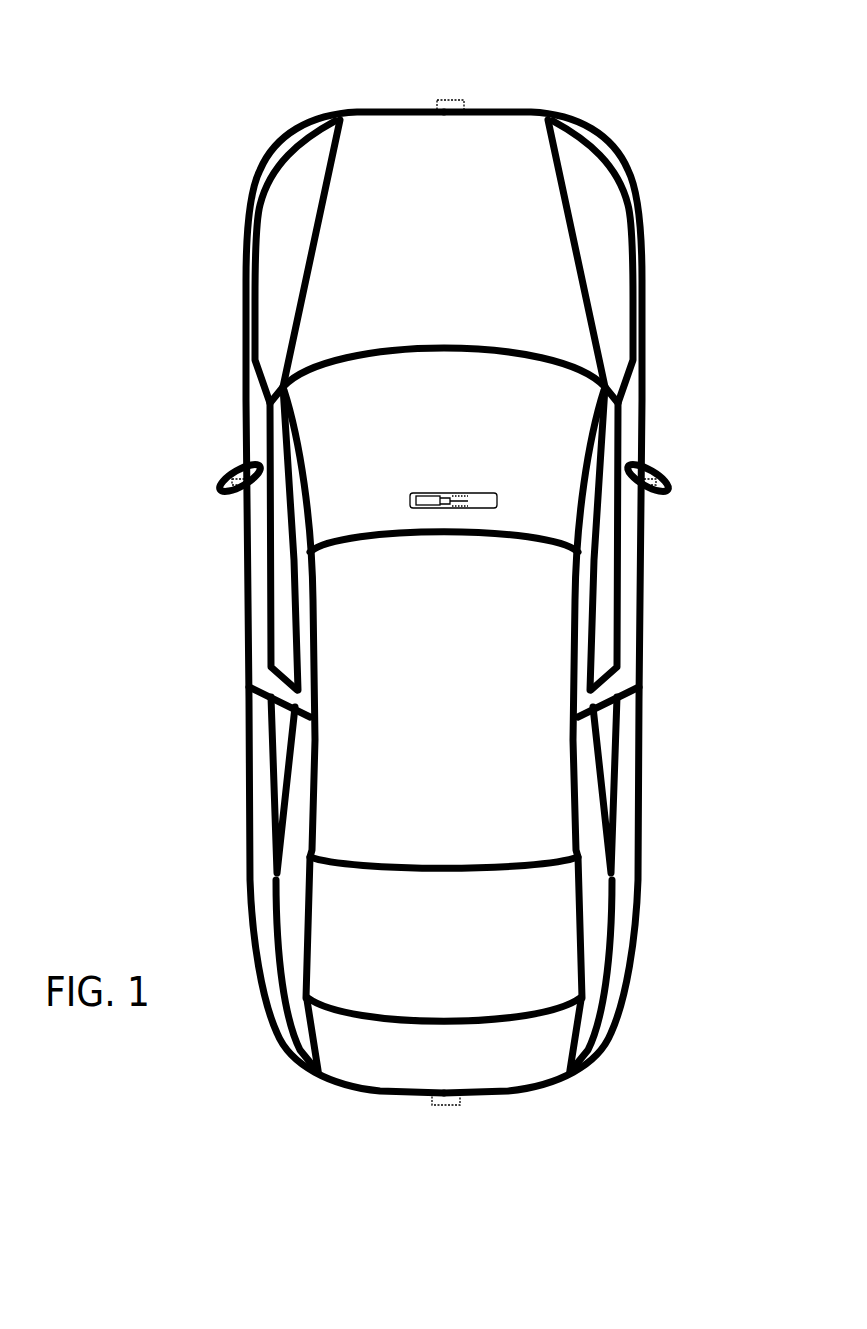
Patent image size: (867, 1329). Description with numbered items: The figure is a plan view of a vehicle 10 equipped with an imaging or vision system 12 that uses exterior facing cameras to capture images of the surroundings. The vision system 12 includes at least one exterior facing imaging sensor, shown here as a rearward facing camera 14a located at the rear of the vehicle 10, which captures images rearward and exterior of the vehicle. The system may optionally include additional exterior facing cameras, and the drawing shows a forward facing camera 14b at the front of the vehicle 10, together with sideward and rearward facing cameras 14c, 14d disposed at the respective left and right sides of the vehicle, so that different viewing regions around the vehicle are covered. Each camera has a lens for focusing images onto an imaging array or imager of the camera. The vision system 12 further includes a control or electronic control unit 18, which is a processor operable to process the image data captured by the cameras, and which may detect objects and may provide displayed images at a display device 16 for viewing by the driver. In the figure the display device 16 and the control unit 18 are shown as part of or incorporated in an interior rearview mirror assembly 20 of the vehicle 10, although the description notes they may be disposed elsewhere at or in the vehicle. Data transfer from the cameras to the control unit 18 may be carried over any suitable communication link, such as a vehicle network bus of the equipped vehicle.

The vehicle 10 is at (190, 199).
The vision system 12 is at (388, 1129).
The rearward facing camera 14a is at (452, 1104).
The forward facing camera 14b is at (463, 96).
The sideward/rearward facing camera 14c is at (232, 473).
The sideward/rearward facing camera 14d is at (651, 473).
The display device 16 is at (428, 496).
The electronic control unit 18 is at (449, 492).
The interior rearview mirror assembly 20 is at (497, 493).